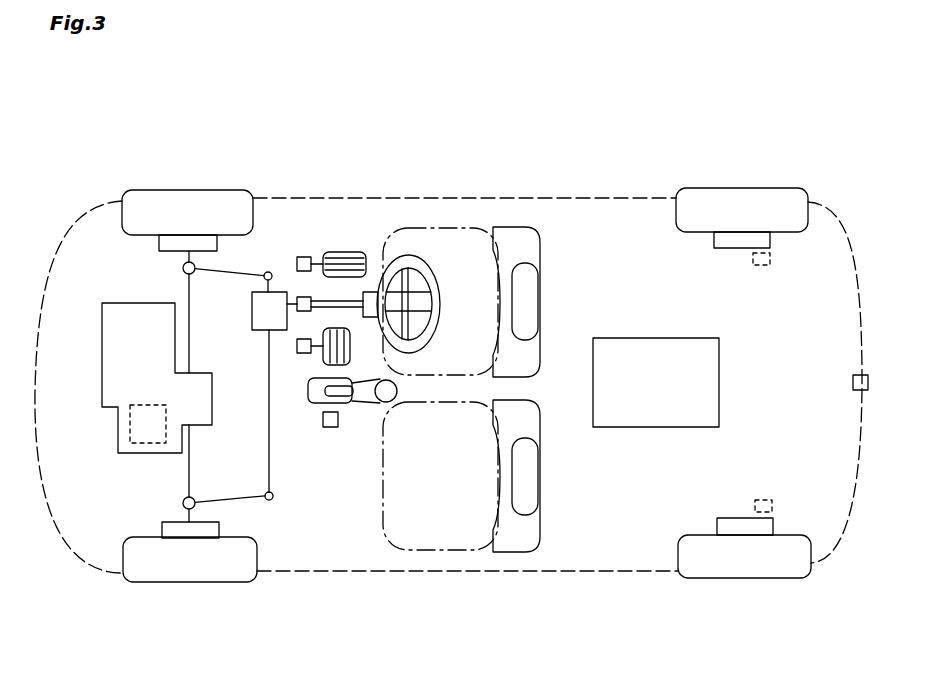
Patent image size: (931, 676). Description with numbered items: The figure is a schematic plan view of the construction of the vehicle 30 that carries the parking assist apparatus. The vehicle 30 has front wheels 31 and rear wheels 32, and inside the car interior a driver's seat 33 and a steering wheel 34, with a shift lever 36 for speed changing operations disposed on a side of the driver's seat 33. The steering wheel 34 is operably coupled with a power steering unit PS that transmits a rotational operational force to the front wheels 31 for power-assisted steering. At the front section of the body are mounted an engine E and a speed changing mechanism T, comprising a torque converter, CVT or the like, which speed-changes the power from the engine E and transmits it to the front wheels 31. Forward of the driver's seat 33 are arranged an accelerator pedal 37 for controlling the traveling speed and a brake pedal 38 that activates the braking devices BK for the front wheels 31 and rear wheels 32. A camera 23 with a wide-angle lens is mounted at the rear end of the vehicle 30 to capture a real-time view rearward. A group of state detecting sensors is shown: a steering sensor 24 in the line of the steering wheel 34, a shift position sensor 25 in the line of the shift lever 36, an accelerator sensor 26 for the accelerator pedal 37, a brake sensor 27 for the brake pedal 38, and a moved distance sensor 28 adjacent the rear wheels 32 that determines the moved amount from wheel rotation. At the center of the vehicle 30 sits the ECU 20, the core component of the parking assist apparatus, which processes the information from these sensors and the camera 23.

The vehicle 30 is at (503, 185).
The front wheels 31 is at (181, 190).
The rear wheels 32 is at (740, 188).
The driver's seat 33 is at (545, 275).
The steering wheel 34 is at (440, 308).
The shift lever 36 is at (370, 403).
The accelerator pedal 37 is at (355, 252).
The brake pedal 38 is at (352, 344).
The ECU 20 is at (640, 427).
The camera 23 is at (853, 381).
The steering sensor 24 is at (297, 298).
The shift position sensor 25 is at (328, 430).
The accelerator sensor 26 is at (302, 257).
The brake sensor 27 is at (300, 353).
The moved distance sensor 28 is at (762, 268).
The braking devices BK is at (159, 243).
The engine E is at (102, 386).
The speed changing mechanism T is at (130, 423).
The power steering unit PS is at (252, 303).